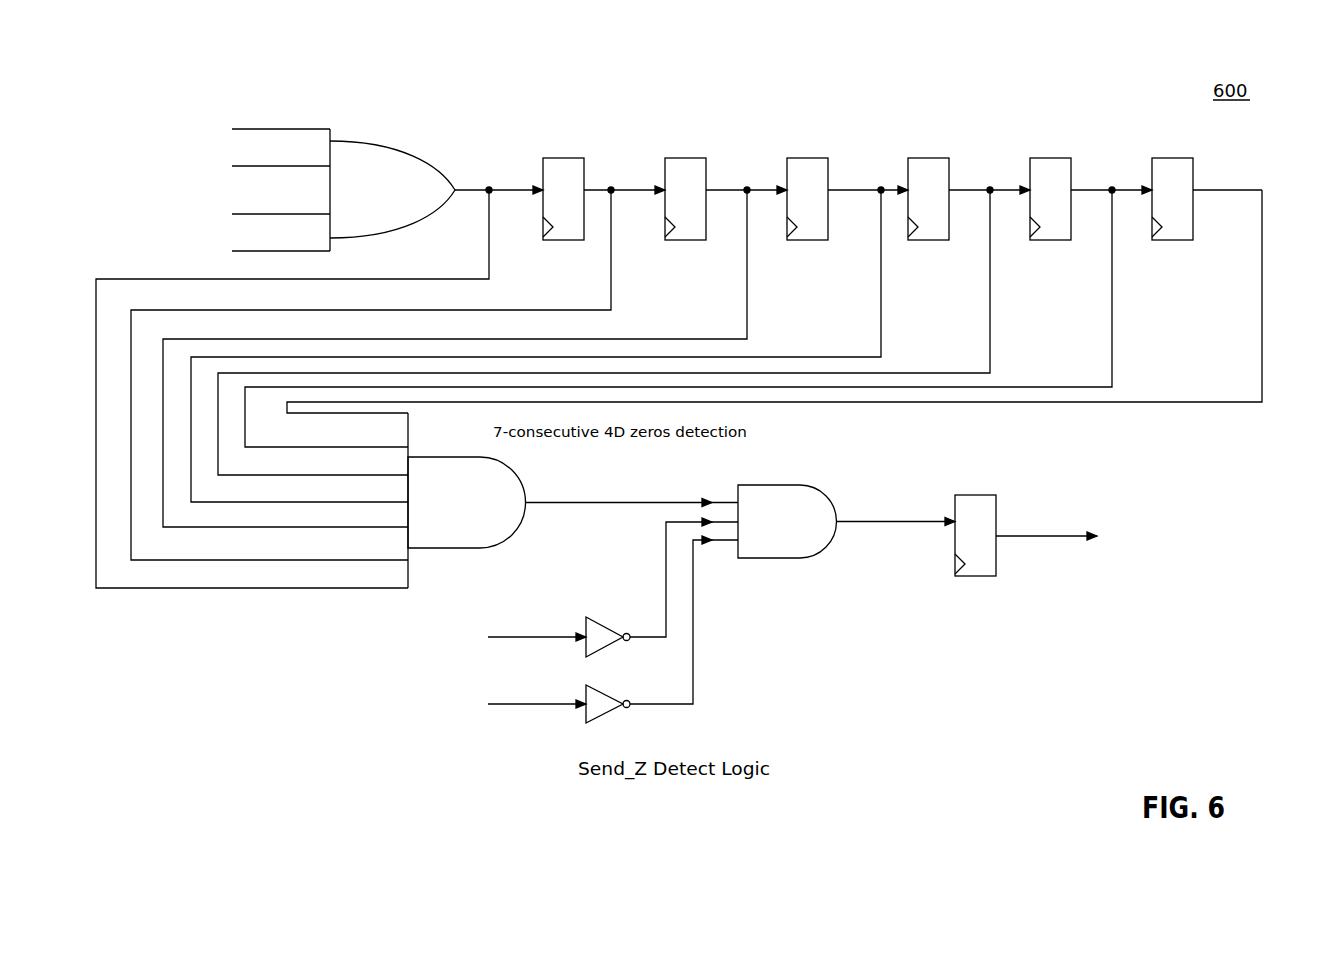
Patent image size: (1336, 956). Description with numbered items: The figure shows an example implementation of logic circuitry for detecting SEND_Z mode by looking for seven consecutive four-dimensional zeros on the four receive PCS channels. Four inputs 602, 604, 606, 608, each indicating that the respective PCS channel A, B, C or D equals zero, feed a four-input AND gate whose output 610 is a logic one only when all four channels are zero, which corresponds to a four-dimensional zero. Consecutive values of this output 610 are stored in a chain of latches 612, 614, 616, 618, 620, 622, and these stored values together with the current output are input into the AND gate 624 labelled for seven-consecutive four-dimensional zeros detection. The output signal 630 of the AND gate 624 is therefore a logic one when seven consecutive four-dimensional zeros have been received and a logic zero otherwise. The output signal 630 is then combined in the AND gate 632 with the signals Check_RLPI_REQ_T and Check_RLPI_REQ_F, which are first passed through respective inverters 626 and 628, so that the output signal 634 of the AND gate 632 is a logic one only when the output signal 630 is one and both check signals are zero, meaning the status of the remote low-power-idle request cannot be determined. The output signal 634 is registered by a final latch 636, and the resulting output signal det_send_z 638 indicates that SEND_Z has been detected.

The PCS_A == 0 input 602 is at (246, 129).
The PCS_B == 0 input 604 is at (246, 166).
The PCS_C == 0 input 606 is at (246, 214).
The PCS_D == 0 input 608 is at (246, 251).
The output 610 is at (470, 190).
The latch 612 is at (553, 158).
The latch 614 is at (675, 158).
The latch 616 is at (797, 158).
The latch 618 is at (918, 158).
The latch 620 is at (1040, 158).
The latch 622 is at (1162, 158).
The AND gate 624 is at (440, 548).
The inverter 626 is at (598, 617).
The inverter 628 is at (598, 686).
The output signal 630 is at (578, 503).
The AND gate 632 is at (768, 485).
The output signal 634 is at (856, 522).
The output D flip-flop 636 is at (975, 495).
The output signal det_send_z 638 is at (1037, 536).